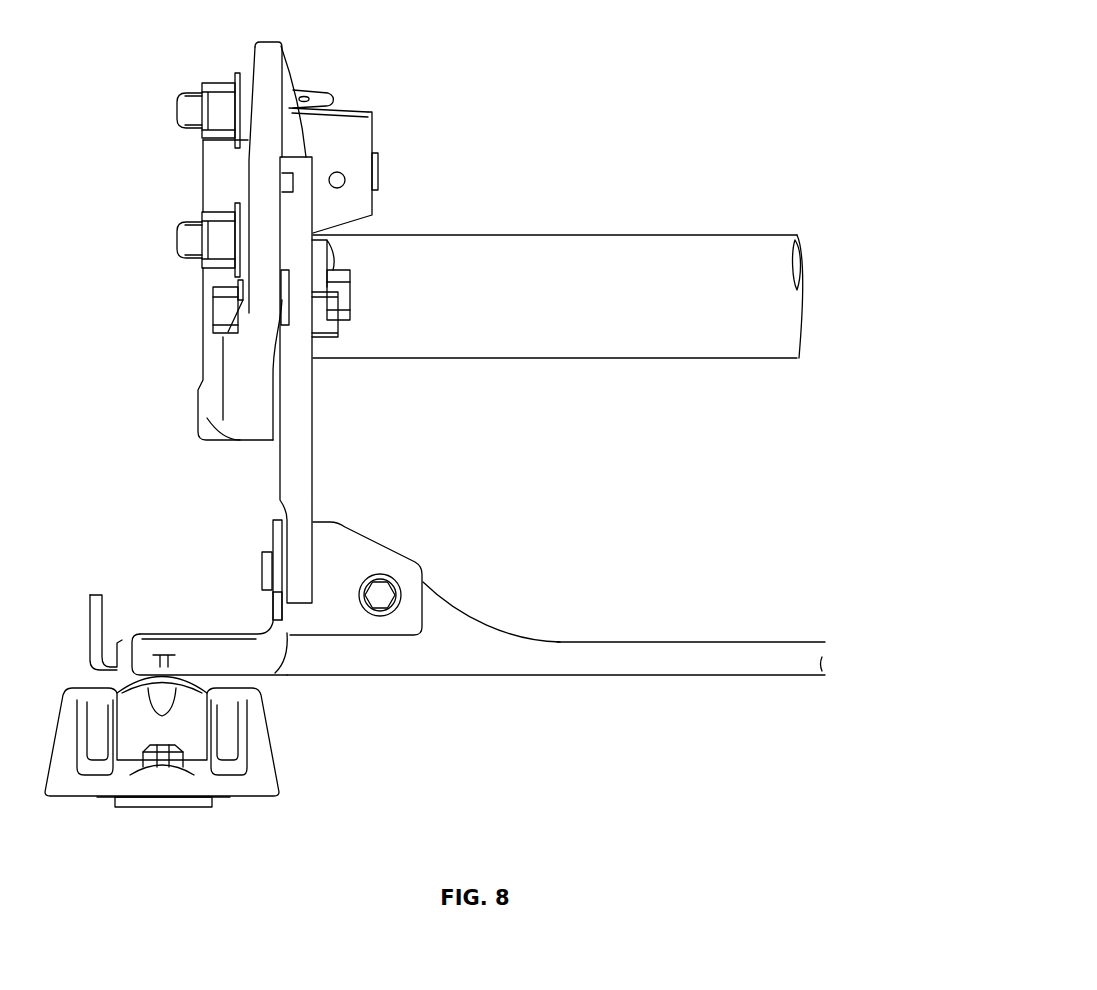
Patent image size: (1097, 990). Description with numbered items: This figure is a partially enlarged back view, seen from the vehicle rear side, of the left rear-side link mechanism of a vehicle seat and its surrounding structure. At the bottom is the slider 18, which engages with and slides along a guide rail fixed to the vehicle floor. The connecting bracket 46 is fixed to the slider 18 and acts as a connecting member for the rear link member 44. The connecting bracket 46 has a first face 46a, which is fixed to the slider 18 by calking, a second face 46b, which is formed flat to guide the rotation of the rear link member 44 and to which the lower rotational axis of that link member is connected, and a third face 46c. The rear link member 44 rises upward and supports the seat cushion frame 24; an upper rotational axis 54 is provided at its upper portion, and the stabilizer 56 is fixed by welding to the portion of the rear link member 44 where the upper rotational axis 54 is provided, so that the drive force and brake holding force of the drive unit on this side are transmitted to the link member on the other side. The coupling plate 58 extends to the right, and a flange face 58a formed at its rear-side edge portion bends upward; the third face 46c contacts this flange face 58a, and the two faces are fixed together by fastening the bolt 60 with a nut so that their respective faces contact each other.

The slider 18 is at (128, 727).
The seat cushion frame 24 is at (268, 92).
The rear link member 44 is at (313, 470).
The connecting bracket 46 is at (203, 632).
The first face 46a is at (115, 663).
The second face 46b is at (271, 544).
The third face 46c is at (380, 538).
The upper rotational axis 54 is at (215, 310).
The stabilizer 56 is at (549, 235).
The coupling plate 58 is at (670, 641).
The flange face 58a is at (422, 580).
The bolt 60 is at (377, 597).